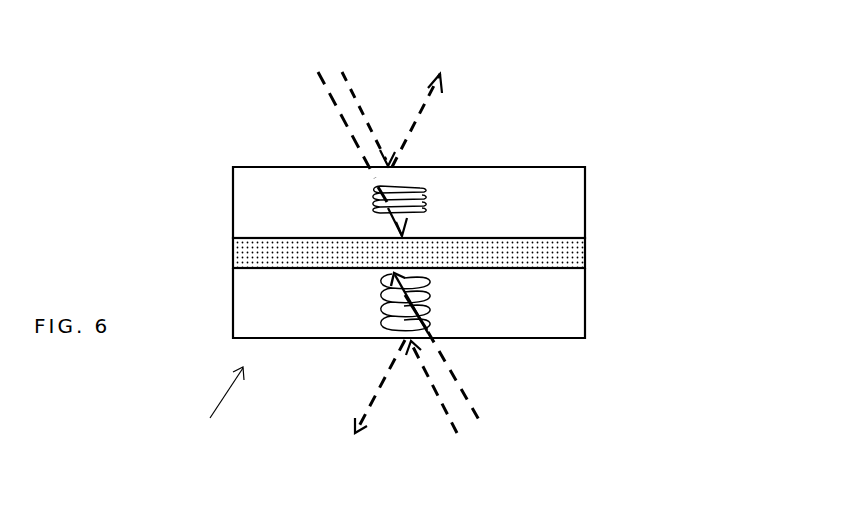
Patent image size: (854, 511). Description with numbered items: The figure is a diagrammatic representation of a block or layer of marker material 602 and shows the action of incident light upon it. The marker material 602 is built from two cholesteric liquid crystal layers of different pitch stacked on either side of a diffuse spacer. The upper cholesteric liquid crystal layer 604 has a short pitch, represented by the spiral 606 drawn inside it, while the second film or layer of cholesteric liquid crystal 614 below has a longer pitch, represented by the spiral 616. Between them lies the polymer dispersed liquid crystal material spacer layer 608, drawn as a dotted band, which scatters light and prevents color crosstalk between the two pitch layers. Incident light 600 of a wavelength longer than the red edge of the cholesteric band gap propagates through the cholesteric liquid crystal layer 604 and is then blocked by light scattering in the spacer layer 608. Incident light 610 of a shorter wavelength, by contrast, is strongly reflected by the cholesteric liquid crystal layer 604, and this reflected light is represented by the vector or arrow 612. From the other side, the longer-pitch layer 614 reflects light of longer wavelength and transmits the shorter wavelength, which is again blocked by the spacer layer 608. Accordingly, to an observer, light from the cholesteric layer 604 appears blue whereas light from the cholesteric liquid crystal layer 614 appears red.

The incident light 600 is at (348, 138).
The marker material 602 is at (204, 418).
The cholesteric liquid crystal layer 604 is at (548, 202).
The spiral 606 is at (420, 188).
The polymer dispersed liquid crystal material spacer layer 608 is at (558, 253).
The incident light 610 is at (358, 90).
The vector or arrow 612 is at (422, 110).
The second film or layer of cholesteric liquid crystal 614 is at (555, 312).
The spiral 616 is at (433, 293).